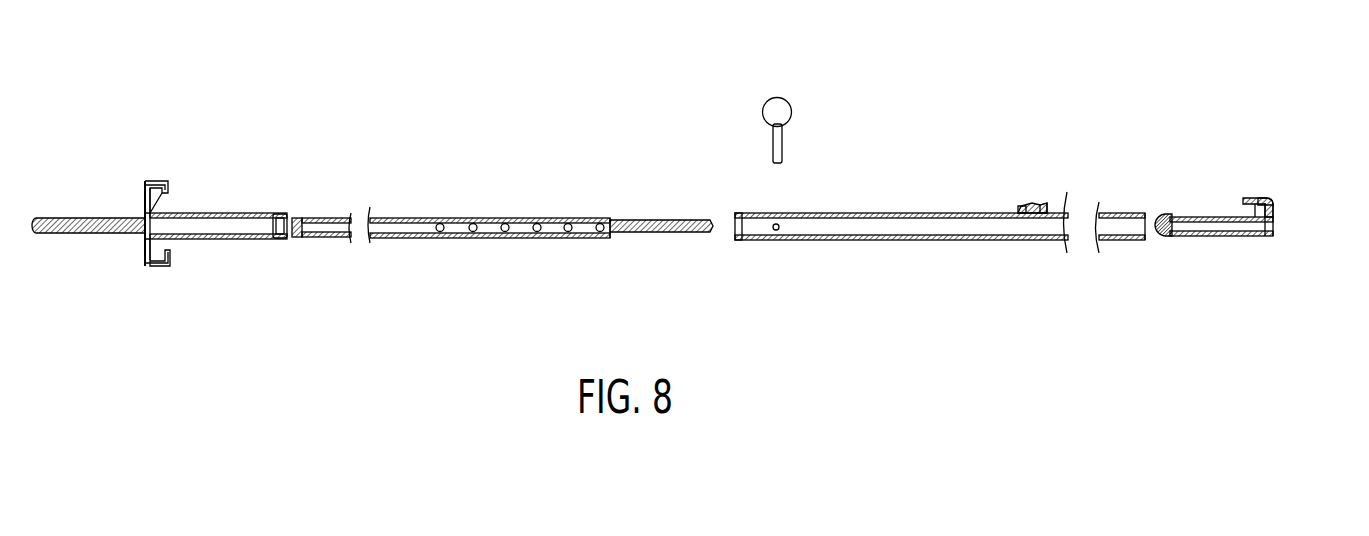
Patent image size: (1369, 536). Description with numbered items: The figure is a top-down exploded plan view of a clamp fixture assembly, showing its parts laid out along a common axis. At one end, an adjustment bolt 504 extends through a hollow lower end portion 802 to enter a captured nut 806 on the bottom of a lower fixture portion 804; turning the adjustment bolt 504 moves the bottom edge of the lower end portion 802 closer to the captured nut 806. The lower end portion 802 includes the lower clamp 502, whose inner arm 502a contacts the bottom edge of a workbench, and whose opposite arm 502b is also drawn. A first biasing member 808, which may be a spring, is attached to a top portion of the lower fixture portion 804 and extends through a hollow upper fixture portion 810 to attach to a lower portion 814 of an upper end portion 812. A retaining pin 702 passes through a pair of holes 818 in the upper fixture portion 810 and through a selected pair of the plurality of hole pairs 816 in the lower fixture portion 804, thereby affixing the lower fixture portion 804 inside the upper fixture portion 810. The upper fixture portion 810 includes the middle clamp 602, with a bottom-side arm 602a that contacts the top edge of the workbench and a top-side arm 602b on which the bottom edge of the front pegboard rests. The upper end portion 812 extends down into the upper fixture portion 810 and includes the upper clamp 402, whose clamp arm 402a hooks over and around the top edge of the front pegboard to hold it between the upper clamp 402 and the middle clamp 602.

The upper clamp 402 is at (1274, 203).
The clamp arm 402a is at (1274, 195).
The lower clamp 502 is at (105, 167).
The inner arm 502a is at (161, 180).
The clamp lower arm 502b is at (200, 298).
The adjustment bolt 504 is at (47, 267).
The middle clamp 602 is at (1048, 156).
The bottom-side arm 602a is at (1014, 207).
The top-side arm 602b is at (1069, 207).
The retaining pin 702 is at (784, 148).
The lower end portion 802 is at (203, 213).
The lower fixture portion 804 is at (386, 218).
The captured nut 806 is at (373, 292).
The first biasing member 808 is at (667, 258).
The upper fixture portion 810 is at (960, 264).
The upper end portion 812 is at (1258, 256).
The lower portion 814 is at (1164, 215).
The hole pairs 816 is at (660, 165).
The pair of holes 818 is at (798, 263).